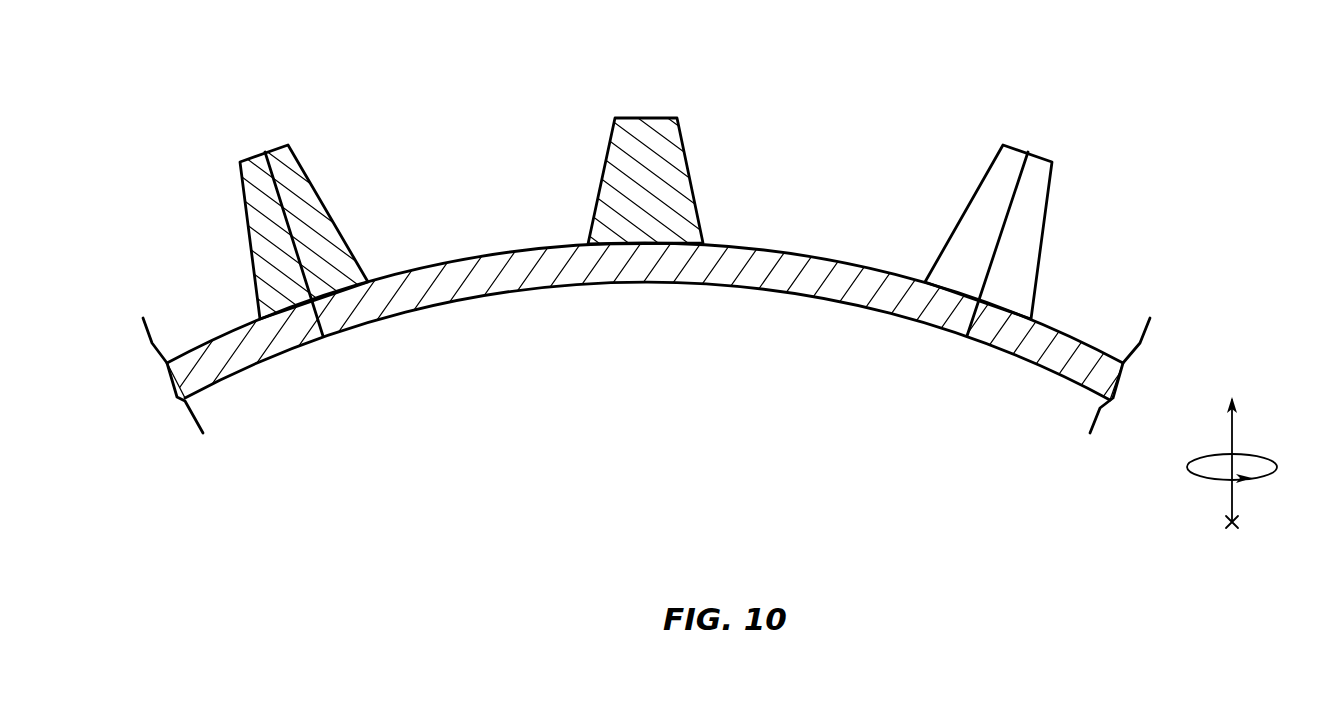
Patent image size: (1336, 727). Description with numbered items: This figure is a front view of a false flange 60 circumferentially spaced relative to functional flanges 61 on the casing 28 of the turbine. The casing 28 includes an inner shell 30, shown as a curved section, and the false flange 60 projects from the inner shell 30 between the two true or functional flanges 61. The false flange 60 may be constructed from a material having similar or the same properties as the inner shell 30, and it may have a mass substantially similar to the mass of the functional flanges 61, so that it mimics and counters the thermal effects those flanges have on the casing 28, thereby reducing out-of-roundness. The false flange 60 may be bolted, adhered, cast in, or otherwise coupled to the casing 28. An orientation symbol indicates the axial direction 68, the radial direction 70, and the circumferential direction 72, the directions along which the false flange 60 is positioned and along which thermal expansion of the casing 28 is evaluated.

The casing 28 is at (668, 363).
The inner shell 30 is at (642, 283).
The false flange 60 is at (694, 178).
The functional flanges 61 is at (248, 128).
The axial axis or direction 68 is at (1236, 525).
The radial axis or direction 70 is at (1232, 437).
The circumferential axis or direction 72 is at (1267, 456).